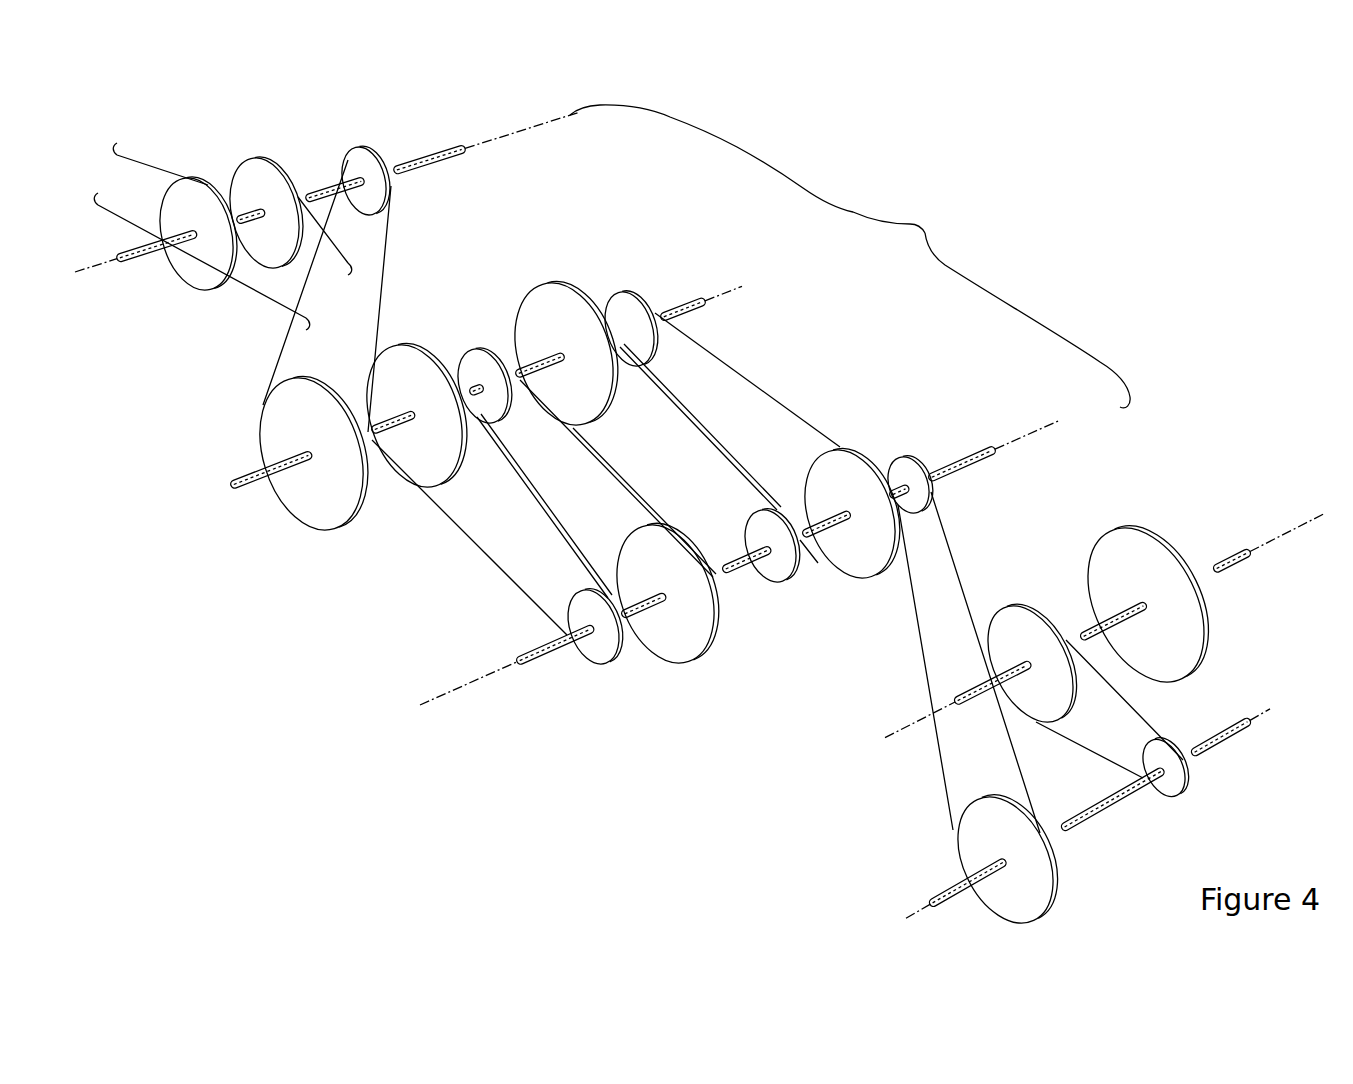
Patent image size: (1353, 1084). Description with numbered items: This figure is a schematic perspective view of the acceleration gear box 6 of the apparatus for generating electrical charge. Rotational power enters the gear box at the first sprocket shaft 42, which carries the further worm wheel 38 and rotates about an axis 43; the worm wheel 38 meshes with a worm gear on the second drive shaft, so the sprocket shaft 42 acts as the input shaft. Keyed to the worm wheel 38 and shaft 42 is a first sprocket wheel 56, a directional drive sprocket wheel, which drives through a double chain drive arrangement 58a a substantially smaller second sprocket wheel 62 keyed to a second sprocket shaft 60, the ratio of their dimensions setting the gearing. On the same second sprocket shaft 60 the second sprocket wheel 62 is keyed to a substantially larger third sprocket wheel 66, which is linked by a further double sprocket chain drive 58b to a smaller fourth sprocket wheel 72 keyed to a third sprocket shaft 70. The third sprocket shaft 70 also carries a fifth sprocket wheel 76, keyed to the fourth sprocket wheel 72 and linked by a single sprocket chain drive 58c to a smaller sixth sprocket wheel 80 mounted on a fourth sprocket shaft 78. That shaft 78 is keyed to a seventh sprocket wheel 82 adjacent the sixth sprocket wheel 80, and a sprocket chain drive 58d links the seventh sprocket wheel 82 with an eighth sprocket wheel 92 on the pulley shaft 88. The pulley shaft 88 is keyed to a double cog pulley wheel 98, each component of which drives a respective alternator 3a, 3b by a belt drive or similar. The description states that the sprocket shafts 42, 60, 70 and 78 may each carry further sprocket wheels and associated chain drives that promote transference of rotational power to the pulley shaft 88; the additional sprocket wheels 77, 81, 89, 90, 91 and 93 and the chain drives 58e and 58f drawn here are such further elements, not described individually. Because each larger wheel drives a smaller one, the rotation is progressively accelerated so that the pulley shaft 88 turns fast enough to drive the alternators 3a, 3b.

The acceleration gear box 6 is at (925, 233).
The further worm wheel 38 is at (1210, 610).
The first sprocket shaft 42 is at (1230, 553).
The axis 43 is at (1290, 527).
The first sprocket wheel 56 is at (1027, 607).
The double chain drive arrangement 58a is at (1147, 715).
The double sprocket chain drive 58b is at (922, 663).
The single sprocket chain drive 58c is at (778, 400).
The sprocket chain drive 58d is at (672, 387).
The belt 58e is at (556, 532).
The belt 58f is at (388, 228).
The second sprocket shaft 60 is at (1223, 755).
The second sprocket wheel 62 is at (1187, 792).
The third sprocket wheel 66 is at (1053, 903).
The third sprocket shaft 70 is at (993, 443).
The fourth sprocket wheel 72 is at (920, 460).
The fifth sprocket wheel 76 is at (857, 453).
The pulley 77 is at (562, 300).
The fourth sprocket shaft 78 is at (682, 300).
The sixth sprocket wheel 80 is at (628, 306).
The pulley 81 is at (790, 575).
The seventh sprocket wheel 82 is at (282, 425).
The pulley shaft 88 is at (447, 154).
The pulley 89 is at (593, 663).
The pulley 90 is at (417, 367).
The pulley 91 is at (480, 363).
The eighth sprocket wheel 92 is at (367, 162).
The pulley 93 is at (707, 652).
The double cog pulley wheel 98 is at (152, 306).
The first alternator 3a is at (112, 128).
The second alternator 3b is at (277, 137).